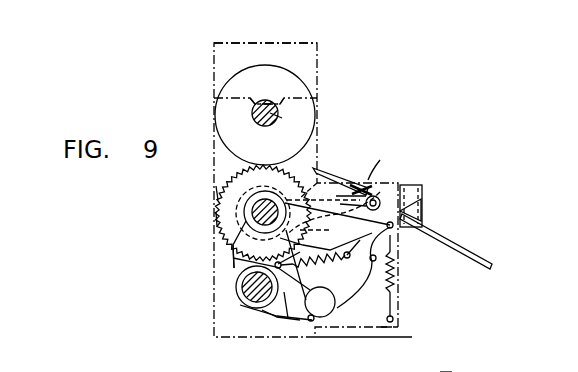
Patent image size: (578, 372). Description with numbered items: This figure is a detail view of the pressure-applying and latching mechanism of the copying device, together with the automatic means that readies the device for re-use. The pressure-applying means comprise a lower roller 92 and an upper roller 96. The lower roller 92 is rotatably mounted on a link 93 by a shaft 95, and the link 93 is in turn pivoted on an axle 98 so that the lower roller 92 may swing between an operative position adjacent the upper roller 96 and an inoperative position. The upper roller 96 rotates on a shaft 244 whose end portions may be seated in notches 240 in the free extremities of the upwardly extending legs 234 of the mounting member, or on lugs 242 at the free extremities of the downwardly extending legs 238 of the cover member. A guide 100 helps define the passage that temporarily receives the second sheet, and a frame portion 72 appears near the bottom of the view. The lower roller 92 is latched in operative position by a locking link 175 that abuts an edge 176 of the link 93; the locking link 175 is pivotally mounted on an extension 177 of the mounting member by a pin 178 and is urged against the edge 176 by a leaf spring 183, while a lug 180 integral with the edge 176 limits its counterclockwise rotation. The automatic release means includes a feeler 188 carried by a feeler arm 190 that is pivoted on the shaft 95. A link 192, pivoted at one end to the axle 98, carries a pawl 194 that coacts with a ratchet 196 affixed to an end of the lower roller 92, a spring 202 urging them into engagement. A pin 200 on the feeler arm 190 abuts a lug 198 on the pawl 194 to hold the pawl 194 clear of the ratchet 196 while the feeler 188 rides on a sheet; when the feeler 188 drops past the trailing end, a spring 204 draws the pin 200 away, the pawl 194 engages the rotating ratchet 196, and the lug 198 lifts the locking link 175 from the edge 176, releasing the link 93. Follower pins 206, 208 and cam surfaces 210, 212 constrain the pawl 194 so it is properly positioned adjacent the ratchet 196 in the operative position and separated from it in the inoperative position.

The frame 72 is at (452, 371).
The lower roller 92 is at (218, 170).
The link 93 is at (236, 268).
The shaft 95 is at (216, 193).
The upper roller 96 is at (293, 77).
The axle 98 is at (240, 292).
The guide 100 is at (485, 258).
The locking link 175 is at (380, 160).
The edge 176 is at (278, 196).
The extension 177 is at (398, 327).
The pin 178 is at (380, 198).
The lug 180 is at (283, 232).
The leaf spring 183 is at (367, 178).
The feeler 188 is at (422, 210).
The feeler arm 190 is at (393, 250).
The link 192 is at (303, 310).
The pawl 194 is at (317, 183).
The ratchet 196 is at (217, 219).
The lug 198 is at (380, 192).
The pin 200 is at (375, 238).
The spring 202 is at (277, 317).
The spring 204 is at (392, 286).
The follower pin 206 is at (397, 272).
The follower pin 208 is at (350, 337).
The cam surface 210 is at (355, 287).
The cam surface 212 is at (288, 307).
The upwardly extending legs 234 is at (214, 158).
The downwardly extending legs 238 is at (283, 50).
The notches 240 is at (278, 127).
The lugs 242 is at (272, 97).
The shaft 244 is at (280, 117).